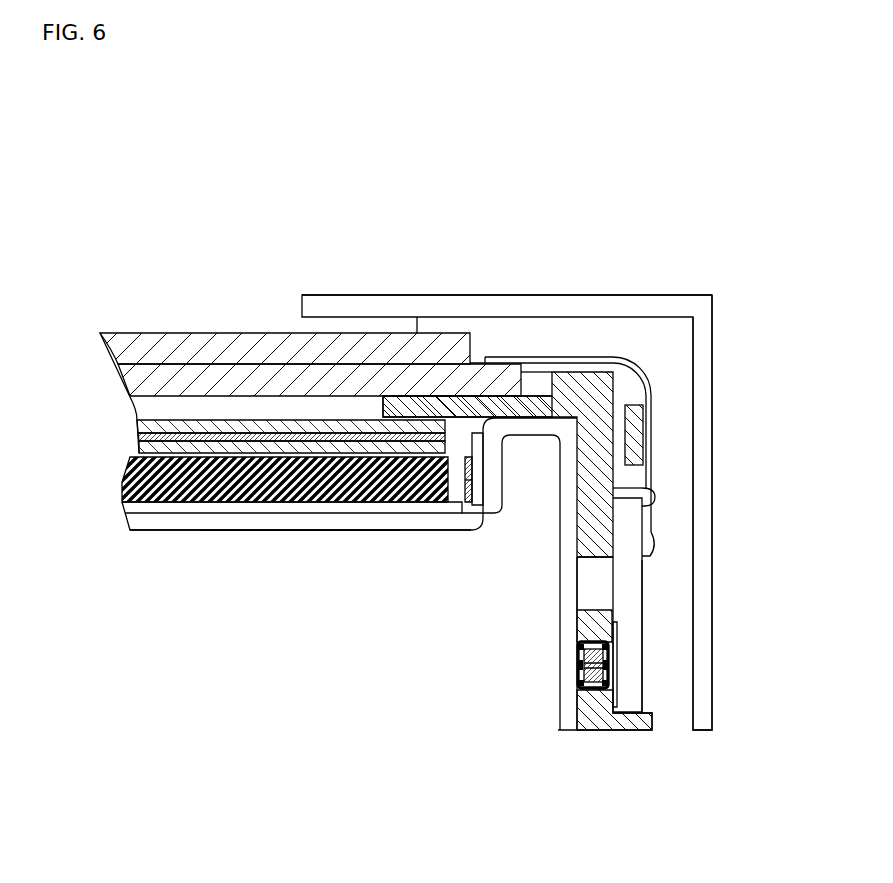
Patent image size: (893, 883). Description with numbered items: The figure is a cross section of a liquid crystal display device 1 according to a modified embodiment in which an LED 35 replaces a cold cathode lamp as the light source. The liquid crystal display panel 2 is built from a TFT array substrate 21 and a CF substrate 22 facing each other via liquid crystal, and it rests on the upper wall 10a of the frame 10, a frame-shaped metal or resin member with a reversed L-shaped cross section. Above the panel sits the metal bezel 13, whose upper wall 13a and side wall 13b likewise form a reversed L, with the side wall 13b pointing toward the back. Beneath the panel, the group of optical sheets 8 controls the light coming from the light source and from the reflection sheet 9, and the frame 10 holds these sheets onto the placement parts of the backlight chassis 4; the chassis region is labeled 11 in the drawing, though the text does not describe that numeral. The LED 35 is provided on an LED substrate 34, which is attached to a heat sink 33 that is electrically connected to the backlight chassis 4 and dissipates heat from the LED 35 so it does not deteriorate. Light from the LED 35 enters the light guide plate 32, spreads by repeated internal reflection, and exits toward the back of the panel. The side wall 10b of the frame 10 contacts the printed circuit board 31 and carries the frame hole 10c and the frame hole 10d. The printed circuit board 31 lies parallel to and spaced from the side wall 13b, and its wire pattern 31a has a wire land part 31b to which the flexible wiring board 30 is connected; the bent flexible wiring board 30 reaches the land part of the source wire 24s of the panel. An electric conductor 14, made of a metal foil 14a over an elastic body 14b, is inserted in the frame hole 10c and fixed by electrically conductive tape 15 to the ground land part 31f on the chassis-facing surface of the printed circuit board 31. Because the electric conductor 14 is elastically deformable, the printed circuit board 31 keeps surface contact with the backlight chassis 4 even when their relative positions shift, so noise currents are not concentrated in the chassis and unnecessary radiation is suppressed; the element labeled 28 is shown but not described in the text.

The liquid crystal display device 1 is at (122, 253).
The liquid crystal display panel 2 is at (254, 332).
The backlight chassis 4 is at (238, 532).
The group of optical sheets 8 is at (112, 421).
The reflection sheet 9 is at (136, 508).
The frame 10 is at (588, 730).
The upper wall 10a is at (463, 402).
The side wall 10b is at (578, 611).
The frame hole 10c is at (611, 649).
The frame hole 10d is at (597, 593).
The chassis 11 is at (165, 532).
The metal bezel 13 is at (457, 294).
The upper wall 13a is at (534, 304).
The side wall 13b is at (701, 731).
The electric conductor 14 is at (598, 692).
The metal foil 14a is at (578, 647).
The elastic body 14b is at (578, 658).
The electrically conductive tape 15 is at (578, 670).
The TFT array substrate 21 is at (172, 376).
The CF substrate 22 is at (213, 340).
The source wire 24s is at (481, 356).
The buffer member 28 is at (628, 404).
The flexible wiring board 30 is at (578, 355).
The printed circuit board 31 is at (627, 697).
The wire pattern 31a is at (640, 553).
The wire land part 31b is at (640, 487).
The ground land part 31f is at (617, 632).
The light guide plate 32 is at (122, 484).
The heat sink 33 is at (477, 490).
The LED substrate 34 is at (468, 462).
The LED 35 is at (466, 487).